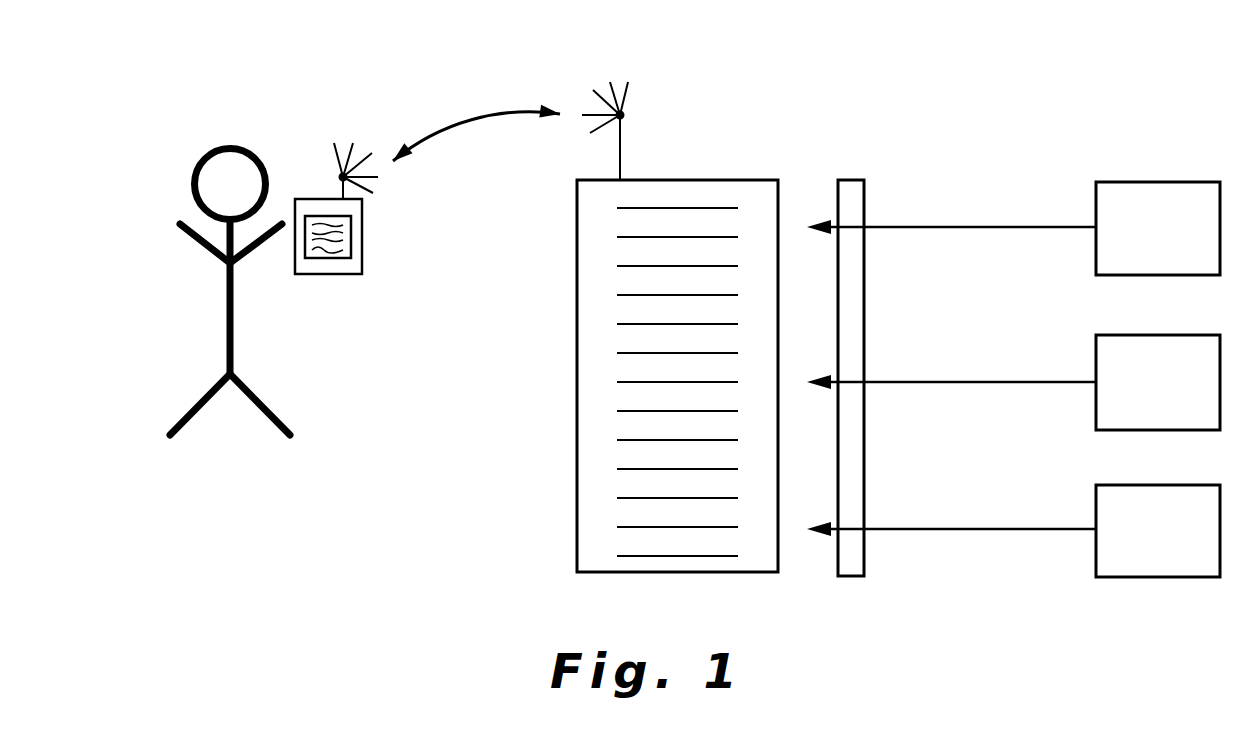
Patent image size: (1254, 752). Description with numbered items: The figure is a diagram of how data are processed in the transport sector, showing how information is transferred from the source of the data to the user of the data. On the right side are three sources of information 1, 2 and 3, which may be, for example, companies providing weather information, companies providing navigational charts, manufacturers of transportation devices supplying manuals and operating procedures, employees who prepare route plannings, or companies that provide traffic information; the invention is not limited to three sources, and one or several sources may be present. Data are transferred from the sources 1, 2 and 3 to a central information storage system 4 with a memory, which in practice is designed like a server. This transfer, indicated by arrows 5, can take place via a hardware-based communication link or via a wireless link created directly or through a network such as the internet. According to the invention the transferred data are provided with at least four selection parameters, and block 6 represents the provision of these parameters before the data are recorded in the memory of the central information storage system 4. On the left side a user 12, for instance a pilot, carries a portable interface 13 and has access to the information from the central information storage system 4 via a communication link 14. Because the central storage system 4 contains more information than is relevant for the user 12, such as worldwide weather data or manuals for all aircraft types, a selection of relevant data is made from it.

The source of information 1 is at (1167, 243).
The source of information 2 is at (1167, 397).
The source of information 3 is at (1167, 546).
The central information storage system 4 is at (742, 180).
The arrows 5 is at (956, 529).
The block 6 is at (853, 180).
The user 12 is at (148, 147).
The portable interface 13 is at (343, 275).
The communication link 14 is at (460, 123).